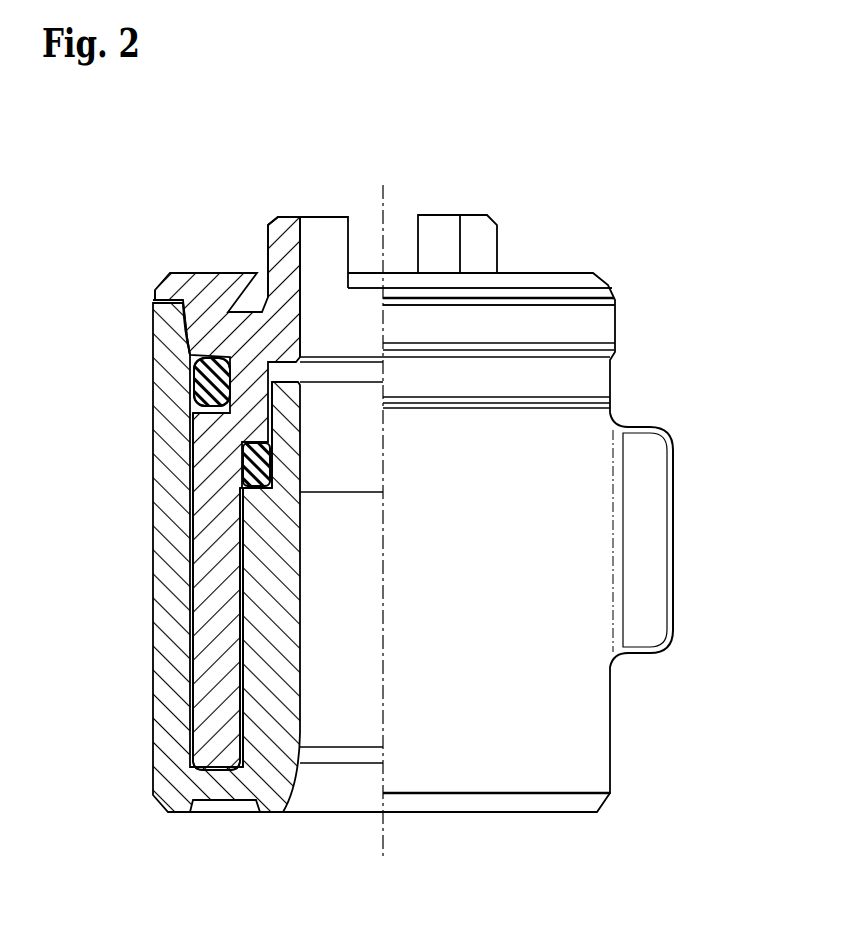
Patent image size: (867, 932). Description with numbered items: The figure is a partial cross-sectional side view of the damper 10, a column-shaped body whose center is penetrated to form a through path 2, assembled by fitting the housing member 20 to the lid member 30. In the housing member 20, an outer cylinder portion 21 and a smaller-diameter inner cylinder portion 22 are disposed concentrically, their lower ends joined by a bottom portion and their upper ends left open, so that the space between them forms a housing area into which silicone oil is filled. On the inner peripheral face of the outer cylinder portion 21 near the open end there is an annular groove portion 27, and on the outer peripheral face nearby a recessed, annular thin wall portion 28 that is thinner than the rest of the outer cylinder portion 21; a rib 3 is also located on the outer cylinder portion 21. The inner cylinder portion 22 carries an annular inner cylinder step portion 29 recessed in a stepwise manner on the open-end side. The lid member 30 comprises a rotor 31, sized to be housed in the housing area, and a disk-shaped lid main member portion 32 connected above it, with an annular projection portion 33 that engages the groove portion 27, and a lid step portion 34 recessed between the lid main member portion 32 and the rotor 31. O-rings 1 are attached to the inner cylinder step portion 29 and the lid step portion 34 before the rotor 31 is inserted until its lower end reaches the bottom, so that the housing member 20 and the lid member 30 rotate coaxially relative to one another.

The damper 10 is at (88, 204).
The O-rings 1 is at (200, 385).
The through path 2 is at (340, 790).
The rib 3 is at (650, 543).
The housing member 20 is at (573, 715).
The outer cylinder portion 21 is at (163, 653).
The inner cylinder portion 22 is at (250, 580).
The groove portion 27 is at (205, 300).
The thin wall portion 28 is at (200, 372).
The inner cylinder step portion 29 is at (265, 572).
The lid member 30 is at (545, 287).
The rotor 31 is at (205, 700).
The lid main member portion 32 is at (481, 296).
The projection portion 33 is at (152, 306).
The lid step portion 34 is at (178, 336).